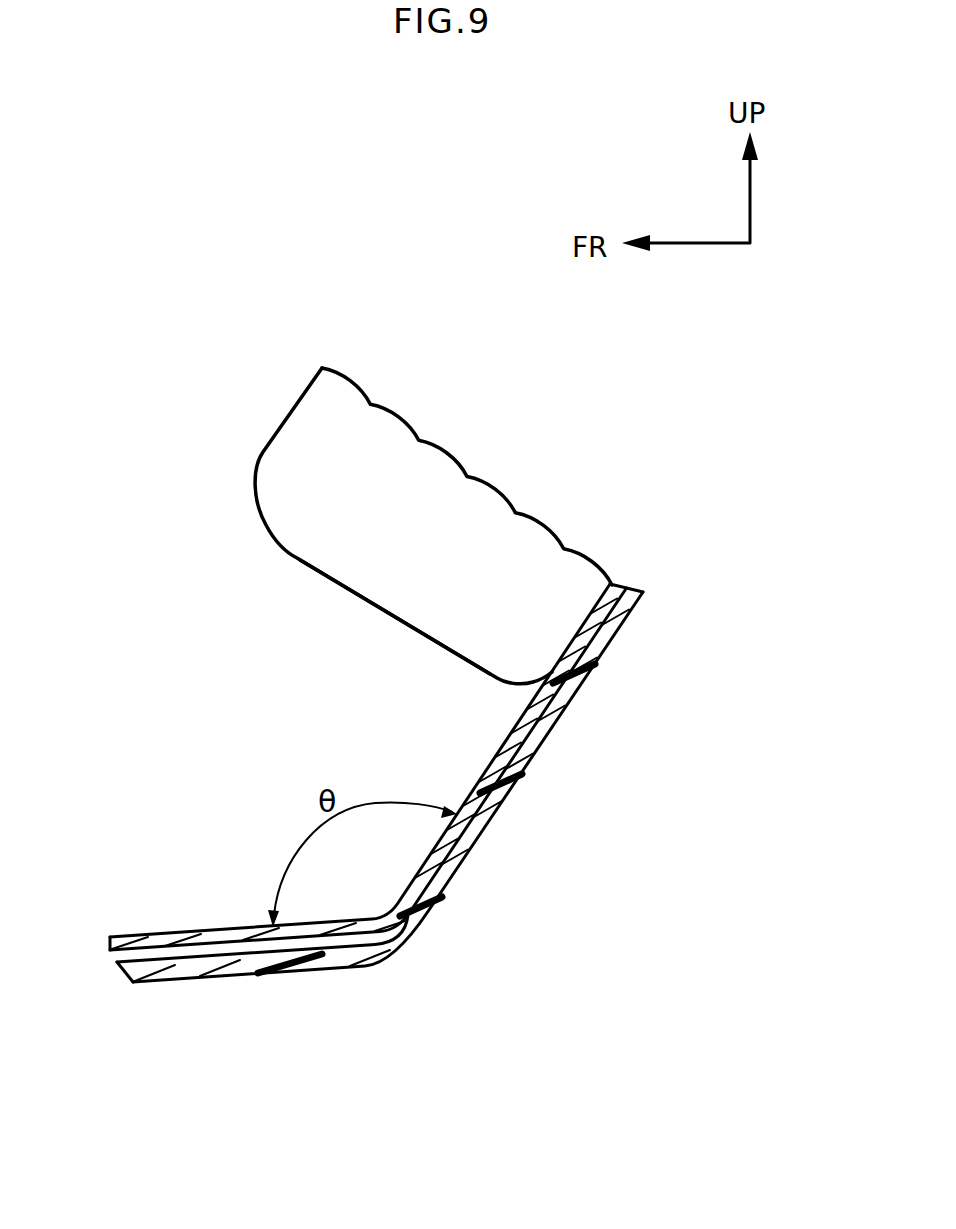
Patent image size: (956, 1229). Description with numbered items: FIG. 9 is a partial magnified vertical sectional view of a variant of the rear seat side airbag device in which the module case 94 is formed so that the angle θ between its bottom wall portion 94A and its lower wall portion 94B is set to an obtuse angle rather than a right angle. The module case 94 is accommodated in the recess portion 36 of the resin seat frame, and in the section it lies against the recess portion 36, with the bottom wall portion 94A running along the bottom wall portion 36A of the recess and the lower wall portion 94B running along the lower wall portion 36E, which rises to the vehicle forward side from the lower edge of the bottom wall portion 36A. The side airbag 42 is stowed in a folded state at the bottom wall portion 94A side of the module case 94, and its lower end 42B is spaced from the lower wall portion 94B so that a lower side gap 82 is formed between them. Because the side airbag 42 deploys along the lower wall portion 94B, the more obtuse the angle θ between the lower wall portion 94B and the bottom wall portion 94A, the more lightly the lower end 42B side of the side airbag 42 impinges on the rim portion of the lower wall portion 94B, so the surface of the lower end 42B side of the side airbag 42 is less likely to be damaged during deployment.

The side airbag 42 is at (258, 454).
The lower end of the side airbag 42B is at (331, 577).
The lower side gap 82 is at (318, 697).
The recess portion 36 is at (395, 832).
The bottom wall portion 36A is at (477, 833).
The lower wall portion 36E is at (253, 969).
The module case 94 is at (350, 774).
The bottom wall portion 94A is at (487, 772).
The lower wall portion 94B is at (235, 937).